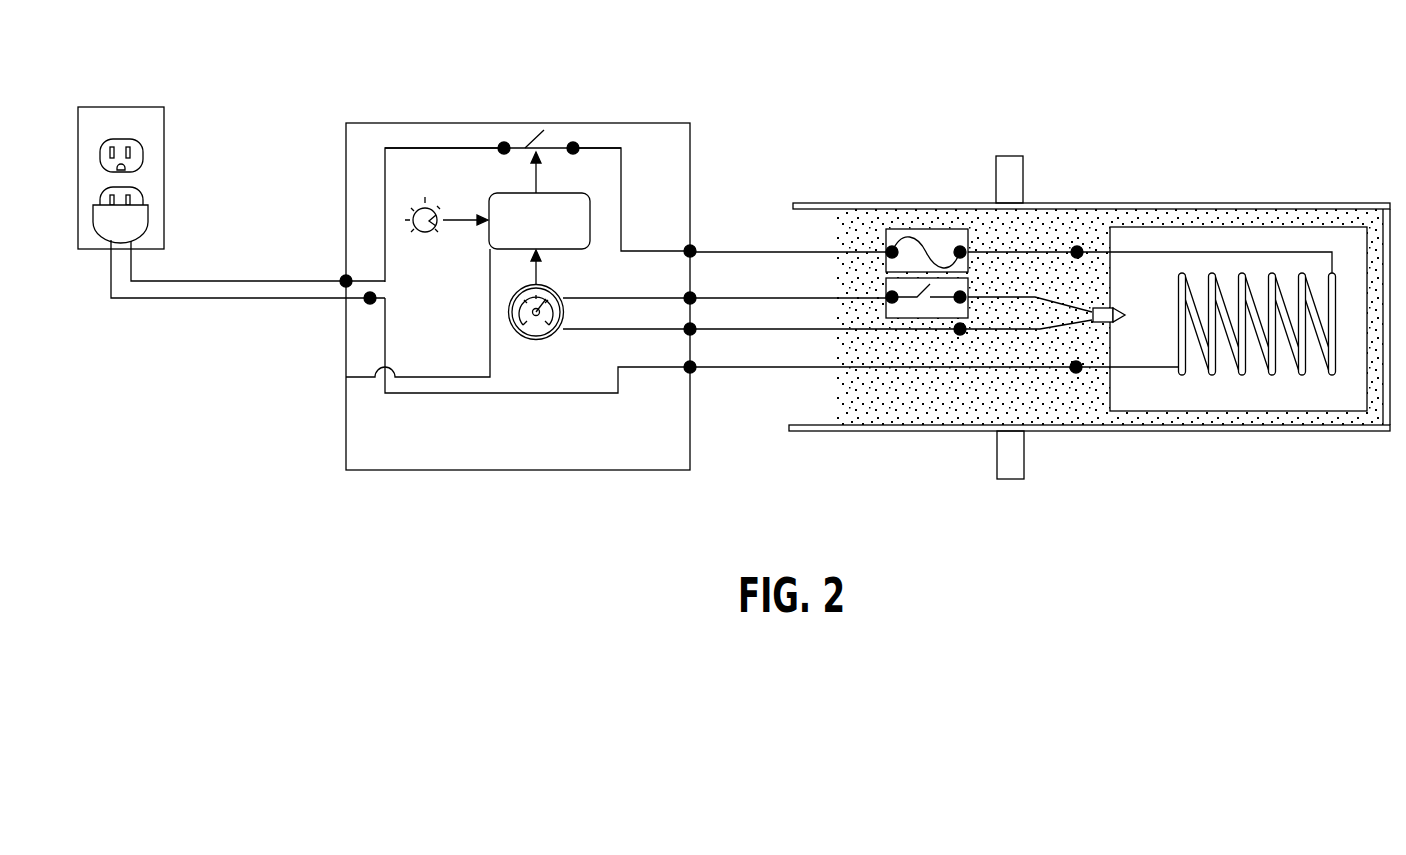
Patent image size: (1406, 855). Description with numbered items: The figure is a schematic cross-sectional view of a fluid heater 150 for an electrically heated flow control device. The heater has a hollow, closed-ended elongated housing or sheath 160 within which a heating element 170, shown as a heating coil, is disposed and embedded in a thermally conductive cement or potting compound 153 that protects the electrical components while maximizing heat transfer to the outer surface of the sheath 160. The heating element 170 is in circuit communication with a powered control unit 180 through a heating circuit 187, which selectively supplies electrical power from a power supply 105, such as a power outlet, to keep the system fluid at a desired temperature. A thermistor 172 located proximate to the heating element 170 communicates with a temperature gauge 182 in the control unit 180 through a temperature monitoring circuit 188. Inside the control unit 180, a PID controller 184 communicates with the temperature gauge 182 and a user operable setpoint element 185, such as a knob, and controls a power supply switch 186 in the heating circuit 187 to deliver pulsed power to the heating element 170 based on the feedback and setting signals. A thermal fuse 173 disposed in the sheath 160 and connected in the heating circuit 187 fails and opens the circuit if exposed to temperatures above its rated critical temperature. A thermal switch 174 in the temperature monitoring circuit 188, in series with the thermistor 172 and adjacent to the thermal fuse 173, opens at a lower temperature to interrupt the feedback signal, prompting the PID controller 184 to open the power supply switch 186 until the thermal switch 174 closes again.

The power supply 105 is at (200, 188).
The fluid heater 150 is at (1050, 245).
The thermally conductive cement or potting compound 153 is at (918, 397).
The housing or sheath 160 is at (1263, 431).
The heating element 170 is at (1242, 273).
The thermistor 172 is at (1115, 321).
The thermal fuse 173 is at (923, 229).
The thermal switch 174 is at (913, 318).
The control unit 180 is at (506, 503).
The temperature gauge 182 is at (536, 340).
The PID controller 184 is at (500, 203).
The setpoint element 185 is at (413, 212).
The power supply switch 186 is at (523, 141).
The heating circuit 187 is at (1027, 250).
The temperature monitoring circuit 188 is at (773, 298).